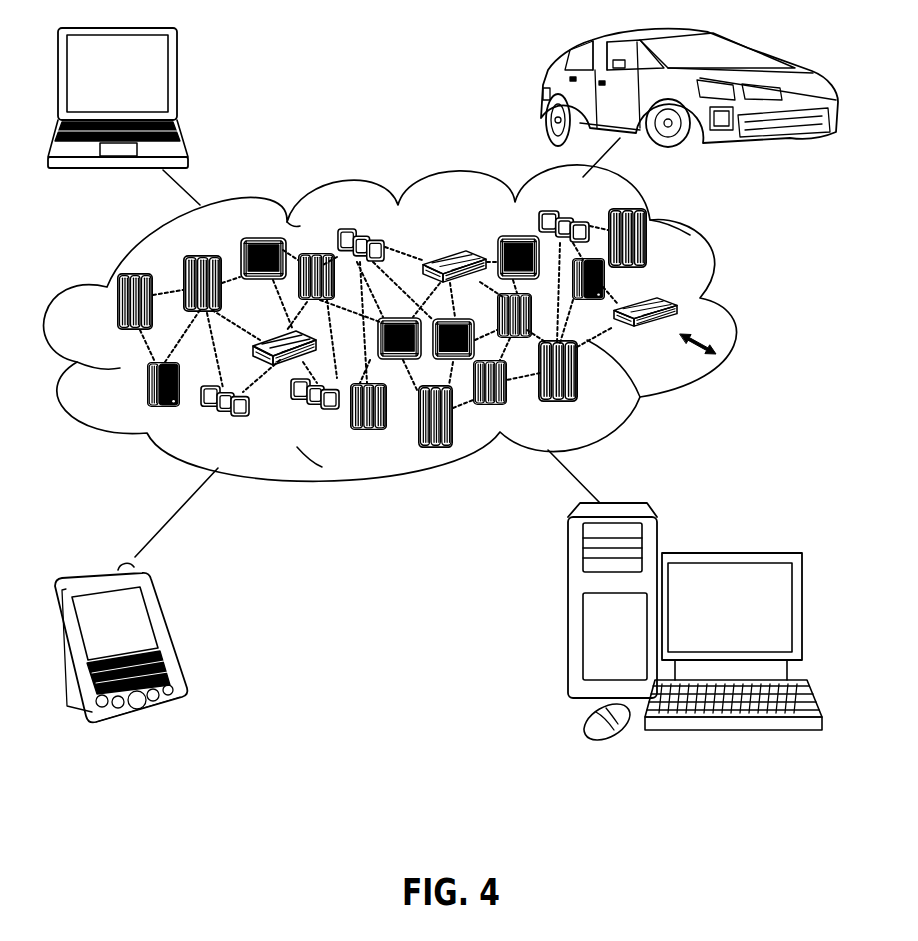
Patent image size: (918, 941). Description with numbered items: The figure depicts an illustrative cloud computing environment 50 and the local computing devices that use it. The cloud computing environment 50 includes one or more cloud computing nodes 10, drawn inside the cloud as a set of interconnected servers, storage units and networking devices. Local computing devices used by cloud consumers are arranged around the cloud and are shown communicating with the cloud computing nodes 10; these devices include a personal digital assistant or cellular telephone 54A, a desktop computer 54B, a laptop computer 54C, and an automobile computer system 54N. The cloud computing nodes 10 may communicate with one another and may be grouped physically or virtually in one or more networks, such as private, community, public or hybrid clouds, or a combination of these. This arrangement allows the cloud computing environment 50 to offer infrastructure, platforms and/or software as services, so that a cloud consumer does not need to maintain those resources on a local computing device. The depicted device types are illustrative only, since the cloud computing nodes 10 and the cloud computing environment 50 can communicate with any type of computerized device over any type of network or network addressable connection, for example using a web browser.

The cloud computing node 10 is at (722, 355).
The cloud computing environment 50 is at (728, 310).
The personal digital assistant or cellular telephone 54A is at (167, 633).
The desktop computer 54B is at (727, 550).
The laptop computer 54C is at (177, 82).
The automobile computer system 54N is at (543, 95).